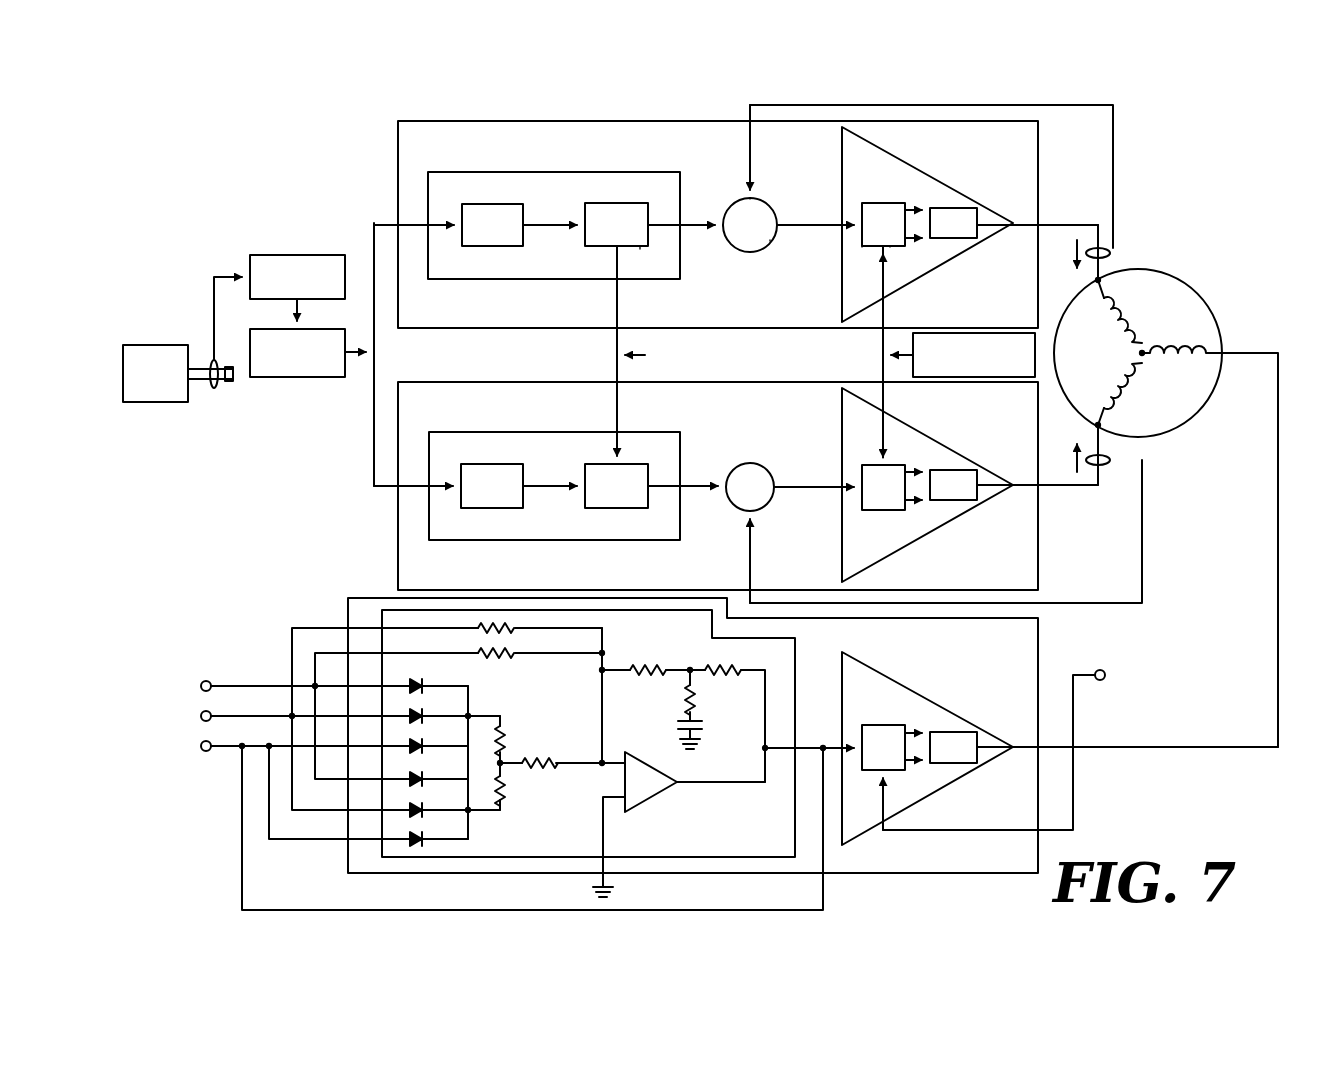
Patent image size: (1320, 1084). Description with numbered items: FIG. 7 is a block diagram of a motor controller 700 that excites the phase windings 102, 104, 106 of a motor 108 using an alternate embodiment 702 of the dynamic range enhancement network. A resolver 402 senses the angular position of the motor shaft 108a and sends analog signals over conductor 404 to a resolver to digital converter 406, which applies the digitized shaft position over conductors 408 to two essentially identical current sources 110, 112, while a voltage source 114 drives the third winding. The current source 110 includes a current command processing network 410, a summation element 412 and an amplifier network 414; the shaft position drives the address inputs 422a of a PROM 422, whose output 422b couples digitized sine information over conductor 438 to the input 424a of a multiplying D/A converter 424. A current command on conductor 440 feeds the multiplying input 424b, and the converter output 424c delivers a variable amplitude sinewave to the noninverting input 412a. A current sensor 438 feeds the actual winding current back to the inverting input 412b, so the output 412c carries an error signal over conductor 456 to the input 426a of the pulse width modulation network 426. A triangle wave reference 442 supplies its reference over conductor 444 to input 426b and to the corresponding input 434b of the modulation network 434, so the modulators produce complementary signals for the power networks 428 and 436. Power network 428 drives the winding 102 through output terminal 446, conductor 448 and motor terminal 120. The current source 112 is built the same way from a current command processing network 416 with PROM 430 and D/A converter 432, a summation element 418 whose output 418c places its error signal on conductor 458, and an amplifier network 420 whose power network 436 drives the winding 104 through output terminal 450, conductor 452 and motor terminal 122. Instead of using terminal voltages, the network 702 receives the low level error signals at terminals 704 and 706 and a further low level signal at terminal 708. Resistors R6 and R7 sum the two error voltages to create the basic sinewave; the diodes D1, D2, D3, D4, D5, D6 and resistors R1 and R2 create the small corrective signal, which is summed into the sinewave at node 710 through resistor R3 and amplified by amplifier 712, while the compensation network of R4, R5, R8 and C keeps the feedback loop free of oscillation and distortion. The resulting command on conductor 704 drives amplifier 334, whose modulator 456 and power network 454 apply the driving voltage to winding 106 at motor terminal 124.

The motor control system 700 is at (252, 155).
The motor 108 is at (168, 402).
The motor shaft 108a is at (224, 383).
The resolver 402 is at (296, 253).
The conductor 404 is at (315, 312).
The resolver to digital converter 406 is at (318, 377).
The conductors 408 is at (380, 351).
The current source 110 is at (398, 136).
The current source 112 is at (742, 389).
The voltage source 114 is at (1038, 640).
The current command processing network 410 is at (560, 172).
The programmable read only memory element 422 is at (478, 204).
The address inputs 422a is at (462, 241).
The output 422b is at (525, 241).
The current sensor 438 is at (541, 225).
The multiplying digital to analog converter element 424 is at (598, 203).
The input 424a is at (585, 243).
The multiplying input 424b is at (621, 246).
The output 424c is at (656, 248).
The summation element 412 is at (765, 206).
The noninverting input 412a is at (726, 214).
The inverting input 412b is at (756, 202).
The output 412c is at (762, 246).
The conductor 456 is at (823, 229).
The amplifier network 414 is at (906, 175).
The pulse width modulation network 426 is at (887, 203).
The input 426a is at (862, 266).
The input 426b is at (888, 258).
The power network 428 is at (932, 198).
The output terminal 446 is at (1018, 218).
The conductor 448 is at (1077, 222).
The conductor 440 is at (1113, 150).
The motor terminal 120 is at (1097, 280).
The phase winding 102 is at (1126, 319).
The phase winding 104 is at (1128, 380).
The phase winding 106 is at (1188, 343).
The motor terminal 122 is at (1096, 428).
The motor terminal 124 is at (1208, 364).
The triangle wave reference 442 is at (958, 333).
The conductor 444 is at (877, 344).
The current command processing network 416 is at (532, 432).
The PROM 430 is at (477, 464).
The digital to analog converter element 432 is at (602, 464).
The summation element 418 is at (736, 463).
The output terminal 418c is at (772, 484).
The conductor 458 is at (836, 493).
The amplifier network 420 is at (926, 436).
The modulation network 434 is at (864, 451).
The phase B modulator triangle wave input 434b is at (885, 434).
The power network 436 is at (948, 504).
The output terminal 450 is at (1024, 486).
The conductor 452 is at (1084, 481).
The dynamic range enhancement network 702 is at (791, 654).
The conductor 704 is at (198, 685).
The terminal 706 is at (200, 716).
The terminal 708 is at (200, 741).
The summing node 710 is at (502, 760).
The amplifier 712 is at (662, 796).
The amplifier 334 is at (900, 677).
The power network 454 is at (932, 715).
The diode D1 is at (418, 678).
The diode D2 is at (418, 710).
The diode D3 is at (418, 740).
The diode D4 is at (418, 773).
The diode D5 is at (418, 804).
The diode D6 is at (418, 833).
The resistor R1 is at (501, 734).
The resistor R2 is at (501, 798).
The resistor R3 is at (542, 758).
The resistor R4 is at (640, 680).
The resistor R5 is at (725, 682).
The resistor R6 is at (513, 634).
The resistor R7 is at (513, 659).
The resistor R8 is at (691, 693).
The capacitor C is at (716, 730).